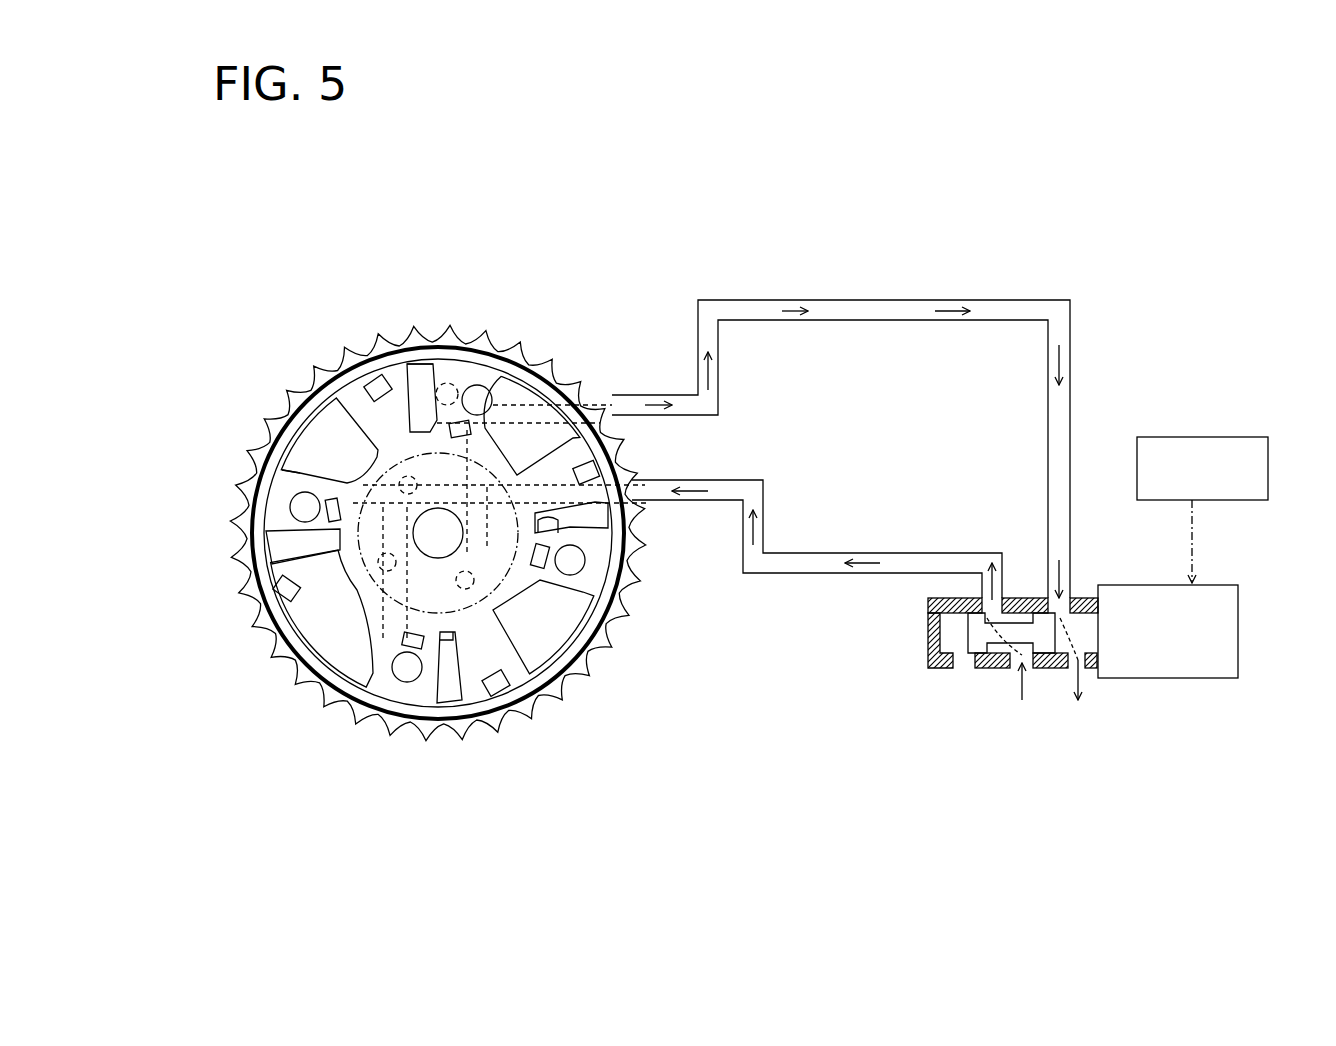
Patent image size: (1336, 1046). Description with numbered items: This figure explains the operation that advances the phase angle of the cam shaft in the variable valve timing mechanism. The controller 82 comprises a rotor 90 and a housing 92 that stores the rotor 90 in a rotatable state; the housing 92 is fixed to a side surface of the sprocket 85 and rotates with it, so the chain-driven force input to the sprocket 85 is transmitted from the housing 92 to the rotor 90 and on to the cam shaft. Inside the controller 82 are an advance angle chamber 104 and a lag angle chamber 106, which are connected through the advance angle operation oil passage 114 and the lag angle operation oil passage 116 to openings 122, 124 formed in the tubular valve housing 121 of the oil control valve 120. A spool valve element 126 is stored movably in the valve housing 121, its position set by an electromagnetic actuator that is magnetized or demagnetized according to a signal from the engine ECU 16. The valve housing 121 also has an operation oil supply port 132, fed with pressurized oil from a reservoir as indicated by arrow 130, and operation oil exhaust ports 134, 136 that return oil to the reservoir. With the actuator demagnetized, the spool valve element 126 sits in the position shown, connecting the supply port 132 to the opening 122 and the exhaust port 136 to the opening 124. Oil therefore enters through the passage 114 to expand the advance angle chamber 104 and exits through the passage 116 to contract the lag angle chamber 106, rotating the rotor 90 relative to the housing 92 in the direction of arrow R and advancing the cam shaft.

The engine ECU 16 is at (1193, 437).
The controller 82 is at (238, 730).
The sprocket 85 is at (456, 746).
The rotor 90 is at (360, 605).
The housing 92 is at (257, 612).
The advance angle chamber 104 is at (317, 445).
The lag angle chamber 106 is at (417, 378).
The advance angle operation oil passage 114 is at (344, 477).
The lag angle operation oil passage 116 is at (888, 300).
The oil control valve 120 is at (926, 674).
The valve housing 121 is at (928, 646).
The opening 122 is at (983, 588).
The opening 124 is at (1067, 593).
The spool valve element 126 is at (980, 642).
The arrow 130 is at (1022, 698).
The operation oil supply port 132 is at (1032, 672).
The operation oil exhaust port 134 is at (963, 663).
The operation oil exhaust port 136 is at (1085, 670).